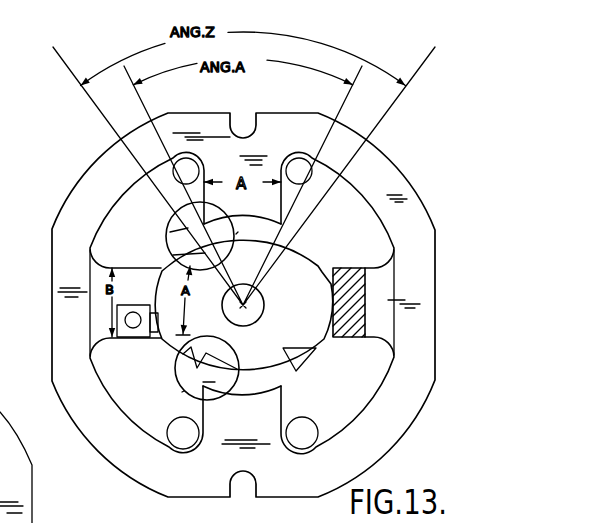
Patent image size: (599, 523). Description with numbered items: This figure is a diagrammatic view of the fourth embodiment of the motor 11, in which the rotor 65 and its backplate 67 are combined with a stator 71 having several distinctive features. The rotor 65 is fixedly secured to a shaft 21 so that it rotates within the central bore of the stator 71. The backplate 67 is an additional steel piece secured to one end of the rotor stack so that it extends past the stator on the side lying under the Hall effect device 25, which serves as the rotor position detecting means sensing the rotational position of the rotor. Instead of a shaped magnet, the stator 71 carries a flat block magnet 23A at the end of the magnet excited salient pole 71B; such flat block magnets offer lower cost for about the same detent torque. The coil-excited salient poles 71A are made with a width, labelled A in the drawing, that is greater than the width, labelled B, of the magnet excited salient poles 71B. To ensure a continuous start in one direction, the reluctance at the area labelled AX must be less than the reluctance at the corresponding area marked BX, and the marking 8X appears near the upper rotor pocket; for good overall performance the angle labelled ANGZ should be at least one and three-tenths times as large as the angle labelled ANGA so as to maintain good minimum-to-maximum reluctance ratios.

The motor 11 is at (62, 153).
The shaft 21 is at (264, 305).
The flat block magnet 23A is at (352, 268).
The Hall effect device 25 is at (133, 339).
The rotor 65 is at (246, 367).
The backplate 67 is at (167, 236).
The stator 71 is at (435, 381).
The coil-excited salient poles 71A is at (262, 208).
The magnet excited salient poles 71B is at (147, 294).
The rotor lobe clearance 8X is at (237, 234).
The area AX is at (182, 392).